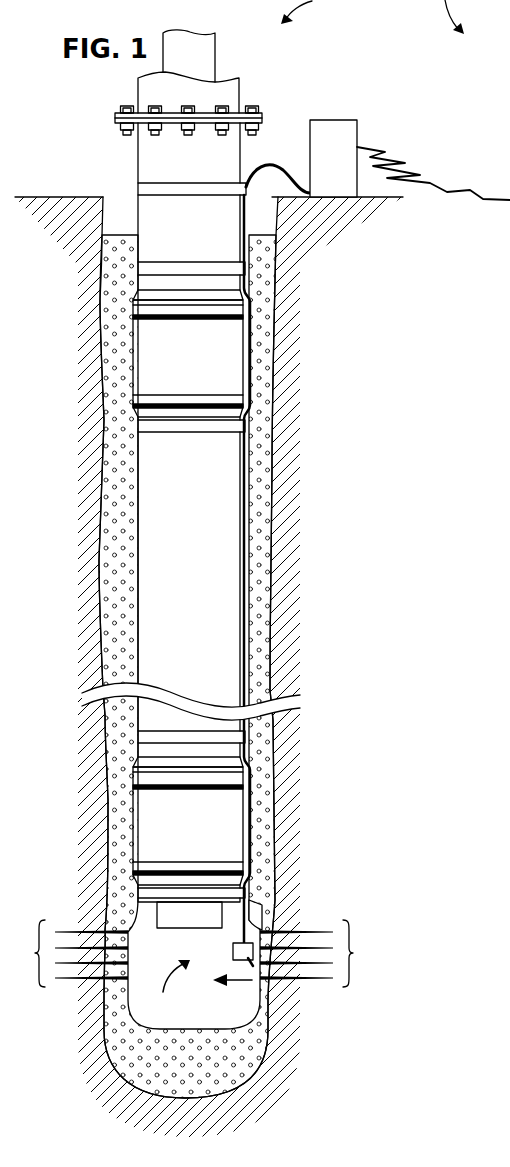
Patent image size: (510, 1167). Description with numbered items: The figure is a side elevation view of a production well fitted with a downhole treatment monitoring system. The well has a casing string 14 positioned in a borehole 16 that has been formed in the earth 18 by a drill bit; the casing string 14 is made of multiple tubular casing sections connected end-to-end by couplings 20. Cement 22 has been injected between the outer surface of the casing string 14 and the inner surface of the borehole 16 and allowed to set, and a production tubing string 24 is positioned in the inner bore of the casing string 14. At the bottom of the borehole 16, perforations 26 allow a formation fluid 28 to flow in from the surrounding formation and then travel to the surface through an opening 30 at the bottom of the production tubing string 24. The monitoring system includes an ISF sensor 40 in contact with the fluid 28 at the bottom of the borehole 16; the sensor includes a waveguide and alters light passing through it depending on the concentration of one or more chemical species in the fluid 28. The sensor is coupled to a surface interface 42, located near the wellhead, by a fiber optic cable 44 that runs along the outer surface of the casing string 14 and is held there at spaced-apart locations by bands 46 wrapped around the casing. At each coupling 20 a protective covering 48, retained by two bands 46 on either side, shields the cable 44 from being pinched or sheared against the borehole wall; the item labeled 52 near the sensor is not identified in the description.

The casing string 14 is at (137, 160).
The borehole 16 is at (119, 194).
The earth 18 is at (77, 231).
The coupling 20 is at (181, 587).
The cement 22 is at (270, 500).
The production tubing string 24 is at (215, 62).
The perforations 26 is at (192, 953).
The fluid 28 is at (232, 996).
The opening 30 is at (170, 990).
The ISF sensor 40 is at (244, 950).
The interface 42 is at (358, 127).
The fiber optic cable 44 is at (273, 158).
The bands 46 is at (170, 183).
The protective covering 48 is at (247, 345).
The cable clamp 52 is at (250, 910).